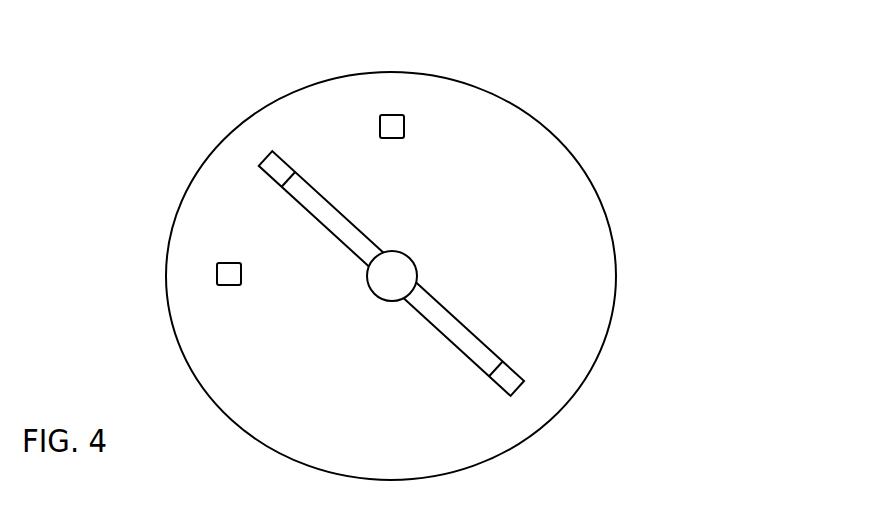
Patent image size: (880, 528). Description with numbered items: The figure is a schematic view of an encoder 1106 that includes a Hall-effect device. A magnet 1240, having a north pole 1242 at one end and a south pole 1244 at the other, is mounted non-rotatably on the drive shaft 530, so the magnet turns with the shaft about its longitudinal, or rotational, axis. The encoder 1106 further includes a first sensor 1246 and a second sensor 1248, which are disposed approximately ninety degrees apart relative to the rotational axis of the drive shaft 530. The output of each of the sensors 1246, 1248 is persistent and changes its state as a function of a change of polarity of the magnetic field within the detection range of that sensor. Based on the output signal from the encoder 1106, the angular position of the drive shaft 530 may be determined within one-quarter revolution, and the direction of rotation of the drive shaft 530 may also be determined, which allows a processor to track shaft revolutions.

The encoder 1106 is at (558, 111).
The magnet 1240 is at (401, 314).
The north pole 1242 is at (268, 178).
The south pole 1244 is at (517, 368).
The first sensor 1246 is at (388, 114).
The second sensor 1248 is at (216, 275).
The drive shaft 530 is at (400, 268).